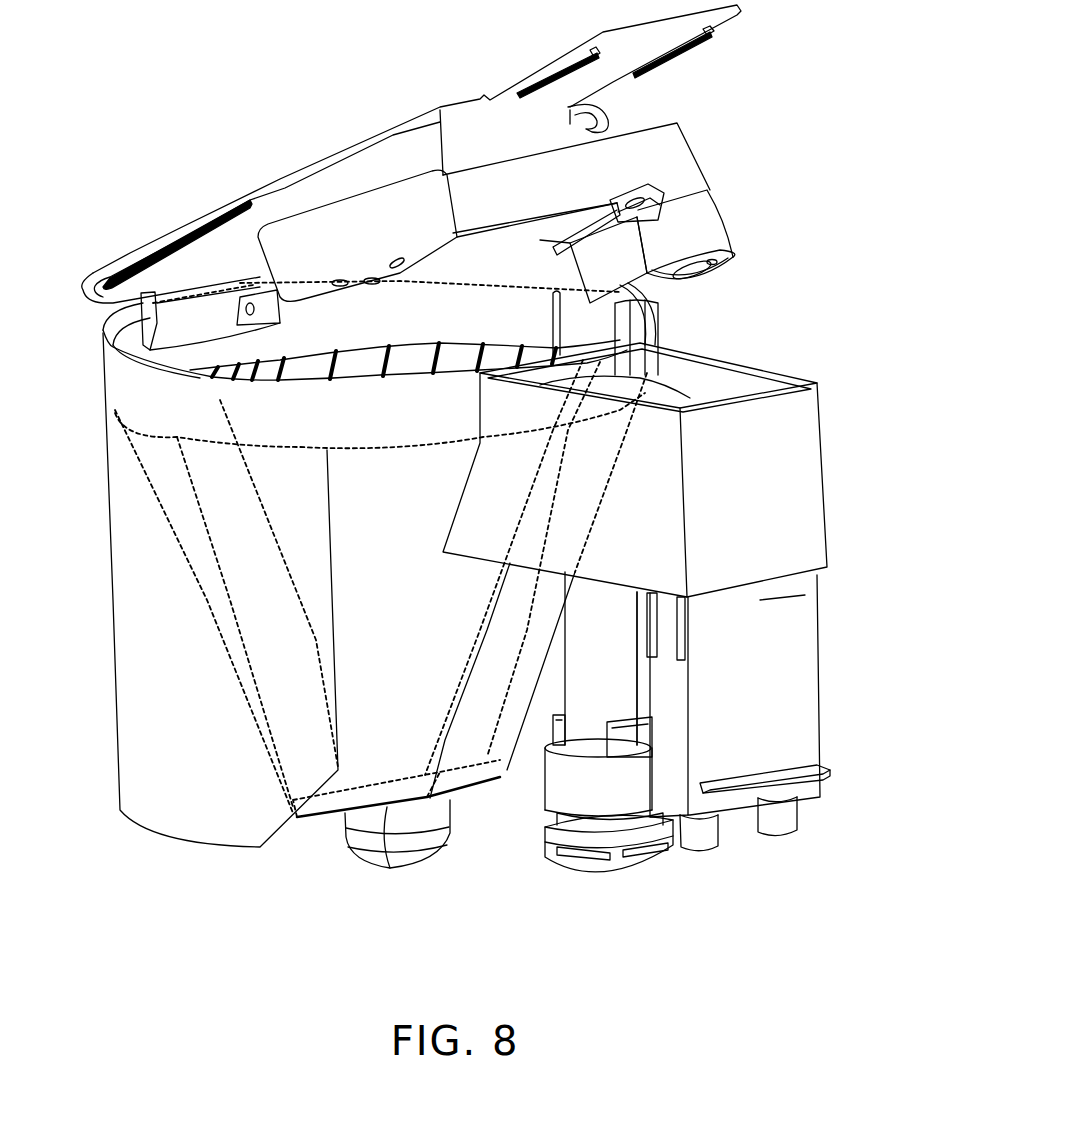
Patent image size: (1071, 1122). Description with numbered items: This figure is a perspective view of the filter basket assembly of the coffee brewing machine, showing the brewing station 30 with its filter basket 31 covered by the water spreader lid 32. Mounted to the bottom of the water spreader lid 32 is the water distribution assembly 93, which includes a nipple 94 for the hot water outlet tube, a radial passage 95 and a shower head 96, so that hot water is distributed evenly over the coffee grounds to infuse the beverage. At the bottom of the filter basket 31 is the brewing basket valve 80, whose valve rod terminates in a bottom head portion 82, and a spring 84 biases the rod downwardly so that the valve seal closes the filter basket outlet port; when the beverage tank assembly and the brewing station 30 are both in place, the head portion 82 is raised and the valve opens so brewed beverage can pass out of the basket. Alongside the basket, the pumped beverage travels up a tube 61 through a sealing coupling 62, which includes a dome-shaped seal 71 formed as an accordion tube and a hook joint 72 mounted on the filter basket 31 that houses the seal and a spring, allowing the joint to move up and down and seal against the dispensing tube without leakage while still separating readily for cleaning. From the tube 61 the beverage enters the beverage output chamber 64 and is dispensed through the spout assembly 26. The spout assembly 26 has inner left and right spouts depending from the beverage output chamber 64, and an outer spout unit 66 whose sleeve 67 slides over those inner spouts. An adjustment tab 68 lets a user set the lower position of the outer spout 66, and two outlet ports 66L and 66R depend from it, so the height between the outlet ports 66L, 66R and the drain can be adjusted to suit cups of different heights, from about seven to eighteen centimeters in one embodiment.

The spout assembly 26 is at (833, 623).
The brewing station 30 is at (190, 553).
The filter basket 31 is at (260, 720).
The water spreader lid 32 is at (612, 107).
The tube 61 is at (587, 677).
The sealing coupling 62 is at (663, 893).
The beverage output chamber 64 is at (708, 382).
The outer spout unit 66 is at (803, 597).
The left outlet port 66L is at (713, 833).
The right outlet port 66R is at (787, 817).
The sleeve 67 is at (760, 677).
The adjustment tab 68 is at (793, 770).
The dome-shaped seal 71 is at (613, 882).
The hook joint 72 is at (573, 790).
The brewing basket valve 80 is at (347, 838).
The bottom head portion 82 is at (433, 840).
The spring 84 is at (387, 815).
The water distribution assembly 93 is at (580, 177).
The nipple 94 is at (690, 227).
The radial passage 95 is at (530, 217).
The shower head 96 is at (372, 272).